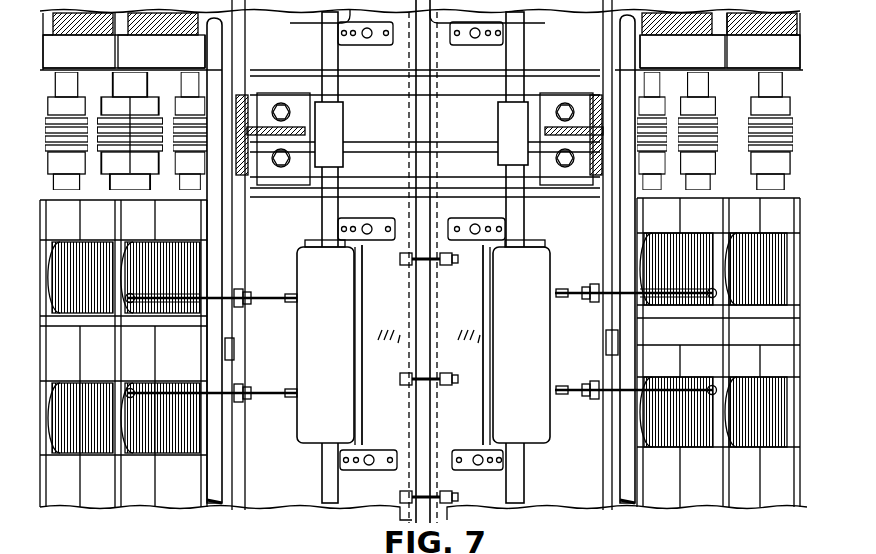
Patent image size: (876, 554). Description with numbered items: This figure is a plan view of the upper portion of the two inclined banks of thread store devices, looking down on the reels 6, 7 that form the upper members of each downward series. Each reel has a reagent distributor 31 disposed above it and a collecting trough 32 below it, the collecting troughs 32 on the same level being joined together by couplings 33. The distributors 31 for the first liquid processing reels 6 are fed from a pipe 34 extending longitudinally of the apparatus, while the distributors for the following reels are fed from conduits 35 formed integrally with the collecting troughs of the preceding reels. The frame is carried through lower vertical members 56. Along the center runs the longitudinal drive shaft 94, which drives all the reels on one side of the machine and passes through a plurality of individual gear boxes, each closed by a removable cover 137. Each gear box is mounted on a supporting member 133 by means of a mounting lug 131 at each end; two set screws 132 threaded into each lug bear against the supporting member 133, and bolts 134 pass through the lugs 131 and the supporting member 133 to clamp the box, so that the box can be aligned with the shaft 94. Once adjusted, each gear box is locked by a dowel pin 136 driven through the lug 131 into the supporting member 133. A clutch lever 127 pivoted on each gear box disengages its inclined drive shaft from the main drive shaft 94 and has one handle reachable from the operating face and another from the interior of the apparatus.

The first liquid processing reel 6 is at (671, 374).
The thread store device 7 is at (754, 374).
The reagent distributor 31 is at (104, 238).
The collecting trough 32 is at (52, 73).
The coupling 33 is at (77, 122).
The pipe 34 is at (216, 231).
The conduit 35 is at (68, 508).
The lower vertical member 56 is at (300, 128).
The drive shaft 94 is at (326, 61).
The clutch lever 127 is at (272, 392).
The mounting lug 131 is at (360, 38).
The set screw 132 is at (492, 38).
The supporting member 133 is at (444, 56).
The bolt 134 is at (367, 235).
The dowel pin 136 is at (488, 234).
The cover 137 is at (516, 303).